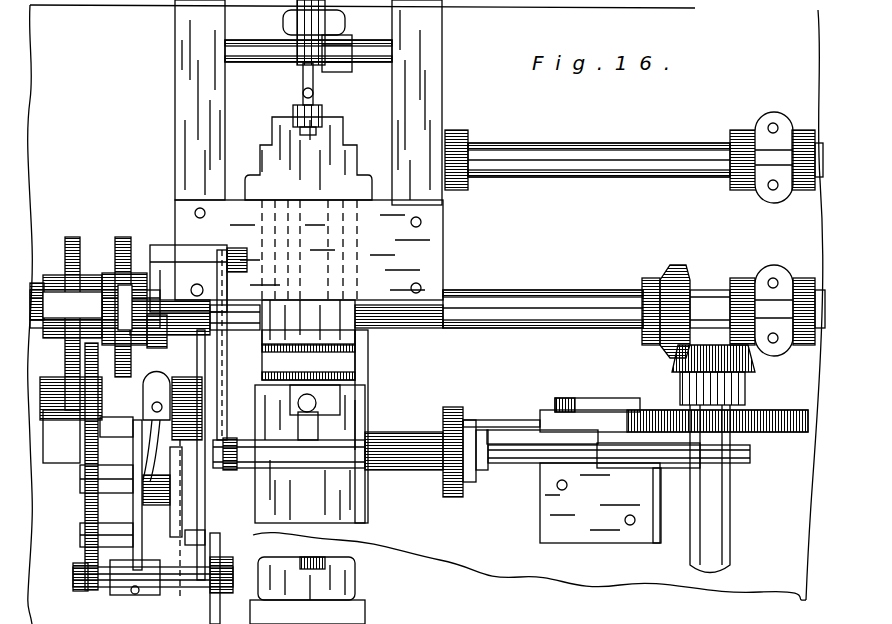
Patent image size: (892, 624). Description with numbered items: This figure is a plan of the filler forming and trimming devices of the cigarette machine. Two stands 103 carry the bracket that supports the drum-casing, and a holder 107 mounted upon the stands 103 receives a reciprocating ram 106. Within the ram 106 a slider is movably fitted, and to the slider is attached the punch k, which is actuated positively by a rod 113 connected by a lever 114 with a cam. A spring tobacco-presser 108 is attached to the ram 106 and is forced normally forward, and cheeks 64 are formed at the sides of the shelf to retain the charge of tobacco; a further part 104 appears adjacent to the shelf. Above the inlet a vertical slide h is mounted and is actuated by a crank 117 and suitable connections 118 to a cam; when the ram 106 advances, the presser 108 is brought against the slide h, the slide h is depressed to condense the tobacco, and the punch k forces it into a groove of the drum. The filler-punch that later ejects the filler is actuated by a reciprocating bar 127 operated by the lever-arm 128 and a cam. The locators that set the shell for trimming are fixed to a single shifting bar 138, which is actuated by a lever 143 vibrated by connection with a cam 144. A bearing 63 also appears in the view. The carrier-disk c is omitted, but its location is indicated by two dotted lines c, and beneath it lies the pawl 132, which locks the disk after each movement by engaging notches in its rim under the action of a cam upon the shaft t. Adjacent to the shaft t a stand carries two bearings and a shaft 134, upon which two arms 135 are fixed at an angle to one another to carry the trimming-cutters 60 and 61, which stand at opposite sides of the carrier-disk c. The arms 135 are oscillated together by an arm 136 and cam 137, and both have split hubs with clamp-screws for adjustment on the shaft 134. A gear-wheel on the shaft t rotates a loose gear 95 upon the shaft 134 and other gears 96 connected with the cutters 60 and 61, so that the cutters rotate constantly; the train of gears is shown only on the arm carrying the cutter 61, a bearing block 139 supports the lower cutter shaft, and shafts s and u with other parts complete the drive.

The stands 103 is at (452, 57).
The lever 114 is at (340, 38).
The rod 113 is at (302, 78).
The ram 106 is at (345, 160).
The holder 107 is at (412, 223).
The spring tobacco-presser 108 is at (362, 316).
The bearing 63 is at (818, 62).
The cam 144 is at (762, 393).
The lever-arm 128 is at (792, 432).
The lever 143 is at (565, 405).
The shifting bar 138 is at (505, 425).
The reciprocating bar 127 is at (512, 465).
The crank 117 is at (310, 454).
The cheeks 64 is at (362, 356).
The rack box 104 is at (308, 340).
The connections 118 is at (170, 245).
The shaft 134 is at (202, 395).
The arm 136 is at (100, 237).
The cam 137 is at (125, 237).
The loose gear 95 is at (86, 432).
The arms 135 is at (88, 505).
The gears 96 is at (85, 555).
The block 139 is at (130, 597).
The rotary cutter 60 is at (174, 482).
The pawl 132 is at (205, 497).
The rotary cutter 61 is at (220, 545).
The shaft s is at (587, 151).
The shaft t is at (380, 300).
The shaft u is at (733, 550).
The punch k is at (262, 357).
The vertical slide h is at (347, 392).
The carrier-disk c is at (208, 614).